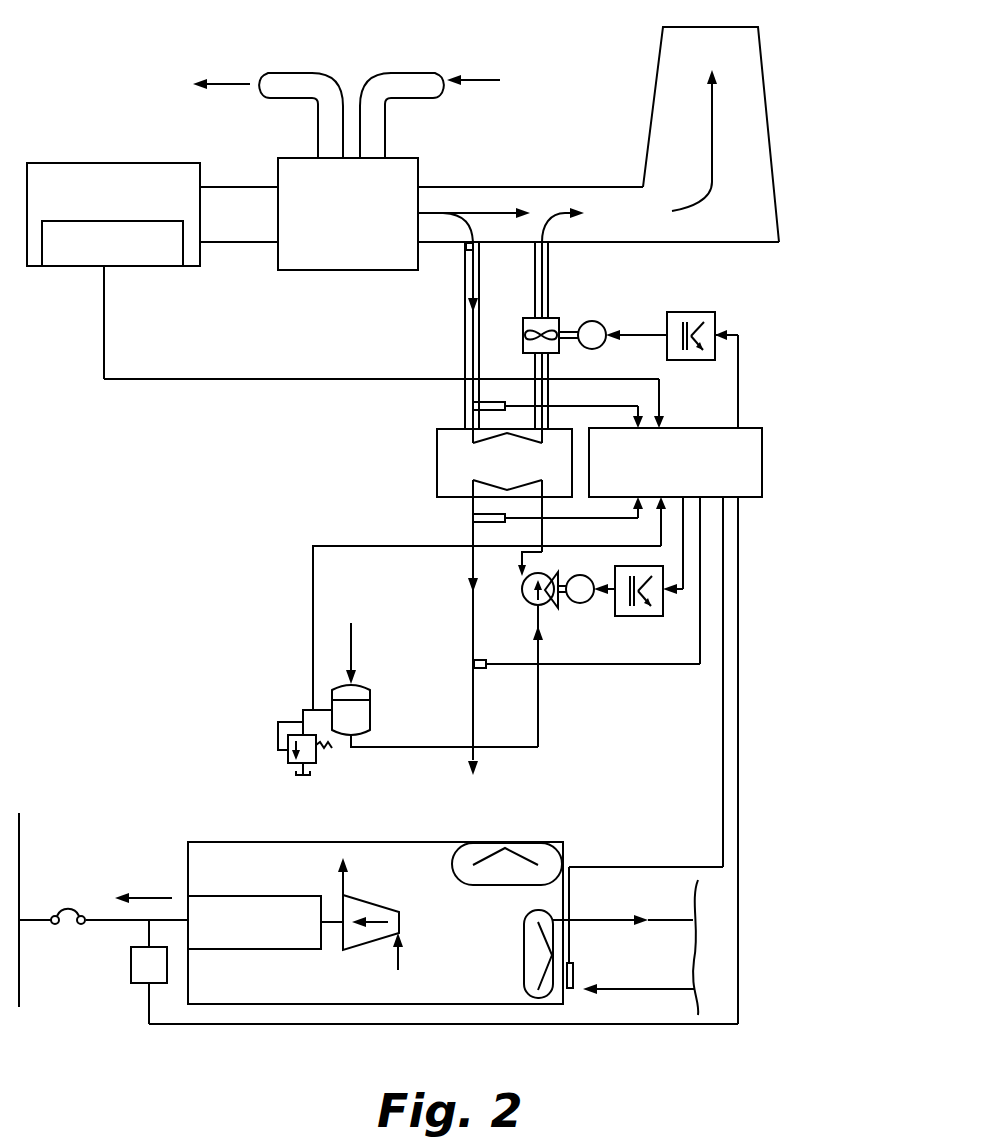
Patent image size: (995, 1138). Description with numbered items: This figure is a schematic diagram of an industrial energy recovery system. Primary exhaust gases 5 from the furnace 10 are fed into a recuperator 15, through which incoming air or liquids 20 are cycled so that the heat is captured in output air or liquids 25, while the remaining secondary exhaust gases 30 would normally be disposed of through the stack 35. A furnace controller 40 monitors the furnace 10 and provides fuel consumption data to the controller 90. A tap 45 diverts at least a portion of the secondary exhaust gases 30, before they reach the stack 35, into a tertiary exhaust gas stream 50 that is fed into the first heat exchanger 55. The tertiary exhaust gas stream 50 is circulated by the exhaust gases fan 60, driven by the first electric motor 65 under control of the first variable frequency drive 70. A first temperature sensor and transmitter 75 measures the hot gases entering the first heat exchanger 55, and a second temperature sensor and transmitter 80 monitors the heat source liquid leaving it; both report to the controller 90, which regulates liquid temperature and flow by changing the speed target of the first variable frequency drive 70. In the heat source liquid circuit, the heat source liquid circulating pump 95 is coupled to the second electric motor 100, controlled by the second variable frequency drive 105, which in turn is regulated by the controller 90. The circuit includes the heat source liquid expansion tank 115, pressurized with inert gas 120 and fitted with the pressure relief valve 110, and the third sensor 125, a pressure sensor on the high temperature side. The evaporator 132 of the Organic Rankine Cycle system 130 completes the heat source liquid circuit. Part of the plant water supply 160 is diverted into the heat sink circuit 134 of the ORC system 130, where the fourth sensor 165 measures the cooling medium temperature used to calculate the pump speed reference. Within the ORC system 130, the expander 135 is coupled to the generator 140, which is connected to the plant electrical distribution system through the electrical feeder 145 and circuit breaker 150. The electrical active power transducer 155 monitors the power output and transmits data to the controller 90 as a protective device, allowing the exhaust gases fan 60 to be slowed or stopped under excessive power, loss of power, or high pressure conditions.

The primary exhaust gases 5 is at (243, 232).
The furnace 10 is at (152, 214).
The recuperator 15 is at (348, 270).
The incoming air or liquids 20 is at (484, 80).
The output air or liquids 25 is at (228, 84).
The secondary exhaust gases 30 is at (484, 213).
The stack 35 is at (651, 92).
The furnace controller 40 is at (86, 266).
The tap 45 is at (466, 250).
The tertiary exhaust gas stream 50 is at (466, 335).
The first heat exchanger 55 is at (437, 465).
The exhaust gases fan 60 is at (545, 318).
The first electric motor 65 is at (596, 322).
The first variable frequency drive 70 is at (690, 312).
The first temperature sensor and transmitter 75 is at (473, 404).
The second temperature sensor and transmitter 80 is at (473, 520).
The controller 90 is at (688, 428).
The heat source liquid circulating pump 95 is at (548, 605).
The second electric motor 100 is at (583, 575).
The second variable frequency drive 105 is at (640, 616).
The pressure relief valve 110 is at (320, 755).
The heat source liquid expansion tank 115 is at (370, 710).
The inert gas 120 is at (351, 655).
The third sensor 125 is at (480, 668).
The Organic Rankine Cycle system 130 is at (255, 842).
The evaporator 132 is at (493, 885).
The heat sink circuit 134 is at (650, 989).
The expander 135 is at (378, 935).
The generator 140 is at (300, 949).
The electrical feeder 145 is at (95, 918).
The circuit breaker 150 is at (70, 903).
The electrical active power transducer 155 is at (131, 965).
The plant water supply 160 is at (697, 918).
The fourth sensor 165 is at (575, 977).